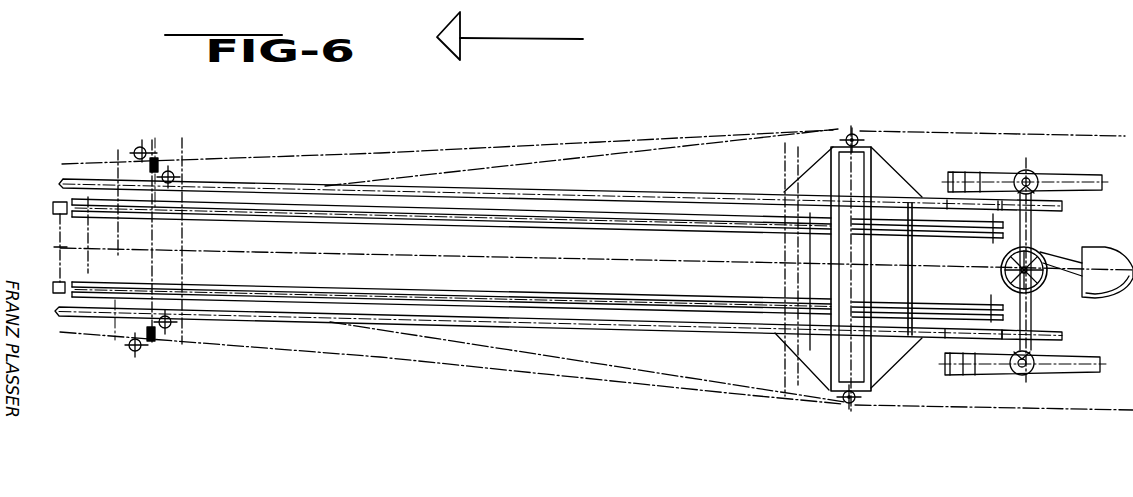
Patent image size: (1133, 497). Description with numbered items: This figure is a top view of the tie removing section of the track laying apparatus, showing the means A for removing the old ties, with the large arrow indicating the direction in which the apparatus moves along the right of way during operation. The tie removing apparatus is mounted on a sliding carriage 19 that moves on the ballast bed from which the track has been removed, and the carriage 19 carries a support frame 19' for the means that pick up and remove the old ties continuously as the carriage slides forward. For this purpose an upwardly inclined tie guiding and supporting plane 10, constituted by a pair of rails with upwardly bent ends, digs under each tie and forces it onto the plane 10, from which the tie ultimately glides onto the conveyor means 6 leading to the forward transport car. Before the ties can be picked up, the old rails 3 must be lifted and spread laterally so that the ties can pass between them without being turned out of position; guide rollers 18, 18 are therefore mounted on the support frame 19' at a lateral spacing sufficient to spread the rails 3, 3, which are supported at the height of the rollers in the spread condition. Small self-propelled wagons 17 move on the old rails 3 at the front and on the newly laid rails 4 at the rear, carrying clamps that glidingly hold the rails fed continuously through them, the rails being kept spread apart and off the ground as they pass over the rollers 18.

The old rails 3 is at (463, 170).
The new rails 4 is at (366, 154).
The conveyor means 6 is at (510, 298).
The upwardly inclined tie guiding and supporting plane 10 is at (938, 310).
The self-propelled wagons 17 is at (152, 340).
The guide rollers 18 is at (847, 402).
The sliding carriage 19 is at (1022, 374).
The support frame 19' is at (1050, 328).
The means for removing the old ties A is at (921, 123).